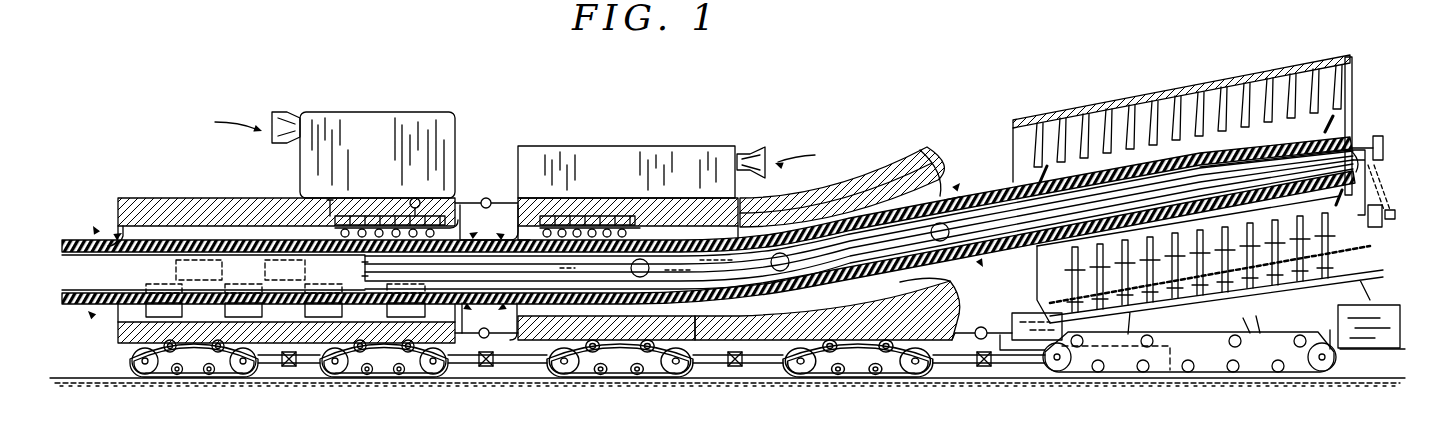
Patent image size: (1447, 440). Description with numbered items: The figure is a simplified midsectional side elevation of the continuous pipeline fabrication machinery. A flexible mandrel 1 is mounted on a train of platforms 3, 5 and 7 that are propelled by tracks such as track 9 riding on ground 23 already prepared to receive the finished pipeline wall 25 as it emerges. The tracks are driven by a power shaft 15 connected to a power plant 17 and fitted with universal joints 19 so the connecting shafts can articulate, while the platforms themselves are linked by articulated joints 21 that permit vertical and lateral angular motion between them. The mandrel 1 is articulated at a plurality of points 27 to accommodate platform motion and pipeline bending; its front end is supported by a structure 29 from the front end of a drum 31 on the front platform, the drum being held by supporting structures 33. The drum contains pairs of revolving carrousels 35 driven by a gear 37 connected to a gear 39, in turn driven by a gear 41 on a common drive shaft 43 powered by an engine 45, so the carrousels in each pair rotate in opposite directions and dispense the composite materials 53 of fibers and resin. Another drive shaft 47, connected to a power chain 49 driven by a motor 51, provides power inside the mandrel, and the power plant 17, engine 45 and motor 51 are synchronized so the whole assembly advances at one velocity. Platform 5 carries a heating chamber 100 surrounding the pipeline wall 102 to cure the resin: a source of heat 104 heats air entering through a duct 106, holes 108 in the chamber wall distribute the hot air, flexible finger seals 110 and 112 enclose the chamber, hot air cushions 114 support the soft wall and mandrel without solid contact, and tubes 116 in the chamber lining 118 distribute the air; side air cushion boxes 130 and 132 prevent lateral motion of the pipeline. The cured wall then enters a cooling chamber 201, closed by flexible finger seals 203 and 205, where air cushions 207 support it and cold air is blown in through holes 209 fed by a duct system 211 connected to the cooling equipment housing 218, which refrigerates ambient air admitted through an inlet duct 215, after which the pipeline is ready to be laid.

The mandrel 1 is at (1330, 124).
The platform 3 is at (1165, 375).
The platform 5 is at (718, 330).
The platform 7 is at (276, 342).
The track 9 is at (1255, 366).
The power shaft 15 is at (312, 368).
The power plant 17 is at (1370, 315).
The universal joint 19 is at (484, 368).
The articulated joint 21 is at (478, 346).
The ground 23 is at (97, 372).
The pipeline wall 25 is at (70, 235).
The articulation points 27 is at (672, 212).
The supporting structure 29 is at (1362, 130).
The drum 31 is at (1280, 72).
The supporting structure 33 is at (1258, 321).
The revolving carrousels 35 is at (1183, 125).
The gear 37 is at (1062, 266).
The gear 39 is at (1093, 320).
The gear 41 is at (1145, 323).
The drive shaft 43 is at (1225, 315).
The engine 45 is at (1040, 314).
The drive shaft 47 is at (1377, 167).
The power chain 49 is at (1392, 195).
The motor 51 is at (1382, 226).
The materials 53 is at (1040, 172).
The heating chamber 100 is at (858, 294).
The pipeline wall 102 is at (970, 190).
The source of heat 104 is at (605, 160).
The duct 106 is at (753, 150).
The holes 108 is at (625, 233).
The flexible finger seal 110 is at (910, 190).
The flexible finger seal 112 is at (515, 232).
The hot air cushions 114 is at (600, 340).
The tubes 116 is at (547, 226).
The chamber lining 118 is at (700, 222).
The air cushion box 130 is at (648, 282).
The air cushion box 132 is at (178, 268).
The cooling chamber 201 is at (282, 222).
The flexible finger seal 203 is at (465, 230).
The flexible finger seal 205 is at (113, 232).
The air cushions 207 is at (238, 318).
The holes 209 is at (395, 208).
The duct system 211 is at (332, 212).
The inlet duct 215 is at (287, 112).
The housing 218 is at (368, 130).